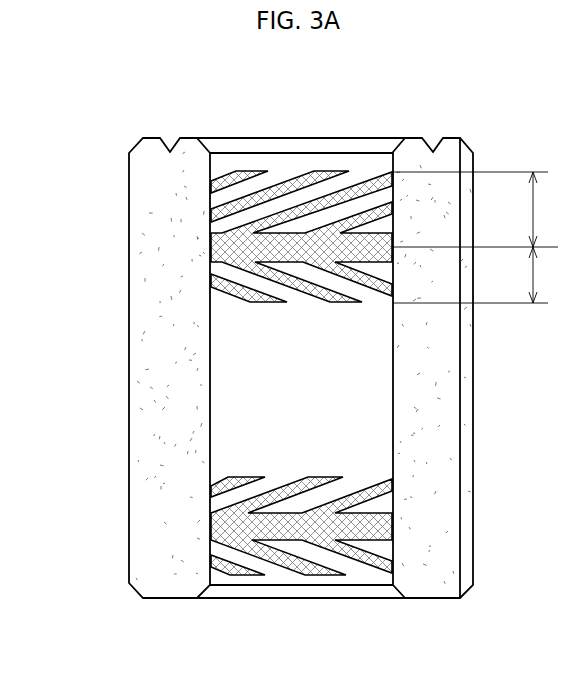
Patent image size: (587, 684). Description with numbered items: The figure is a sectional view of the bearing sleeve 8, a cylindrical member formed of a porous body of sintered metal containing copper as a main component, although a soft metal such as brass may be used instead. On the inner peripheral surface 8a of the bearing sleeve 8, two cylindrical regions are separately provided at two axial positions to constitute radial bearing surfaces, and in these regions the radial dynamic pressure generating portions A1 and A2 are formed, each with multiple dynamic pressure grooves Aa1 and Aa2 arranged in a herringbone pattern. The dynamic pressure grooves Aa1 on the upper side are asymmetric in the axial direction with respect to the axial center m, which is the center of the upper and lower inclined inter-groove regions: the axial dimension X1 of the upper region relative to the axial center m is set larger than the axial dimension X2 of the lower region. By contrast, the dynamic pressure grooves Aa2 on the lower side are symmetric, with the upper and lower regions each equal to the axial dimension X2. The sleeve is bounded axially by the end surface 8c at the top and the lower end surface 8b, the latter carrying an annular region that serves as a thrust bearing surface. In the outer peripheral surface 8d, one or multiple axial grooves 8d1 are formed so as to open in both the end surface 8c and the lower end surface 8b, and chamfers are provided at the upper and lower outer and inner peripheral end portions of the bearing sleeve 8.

The bearing sleeve 8 is at (96, 148).
The inner peripheral surface 8a is at (378, 363).
The lower end surface 8b is at (433, 598).
The end surface 8c is at (432, 138).
The outer peripheral surface 8d is at (129, 339).
The axial groove 8d1 is at (468, 458).
The radial dynamic pressure generating portion A1 is at (233, 199).
The radial dynamic pressure generating portion A2 is at (233, 495).
The dynamic pressure groove Aa1 is at (258, 182).
The dynamic pressure groove Aa2 is at (262, 486).
The axial dimension X1 is at (484, 209).
The axial dimension X2 is at (484, 275).
The axial center m is at (488, 246).